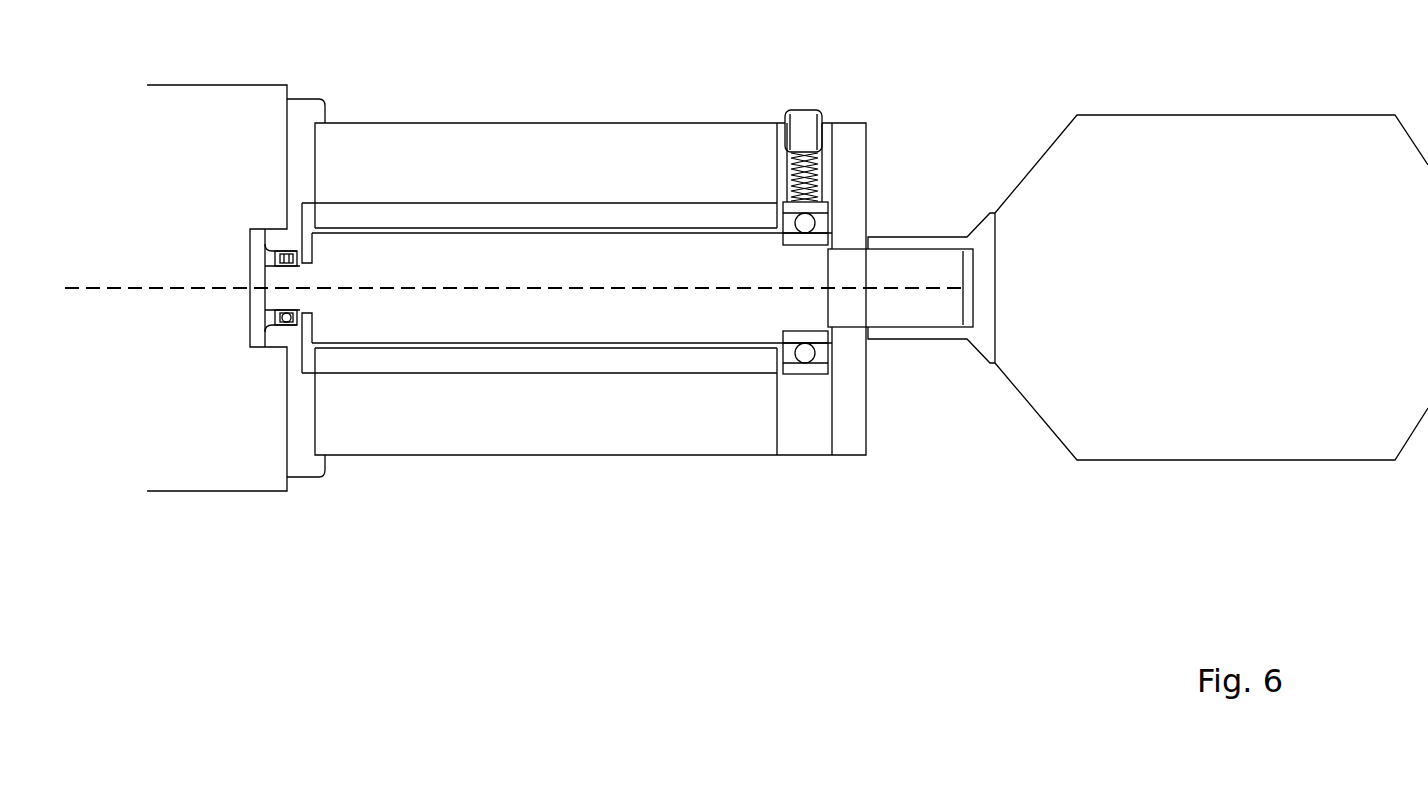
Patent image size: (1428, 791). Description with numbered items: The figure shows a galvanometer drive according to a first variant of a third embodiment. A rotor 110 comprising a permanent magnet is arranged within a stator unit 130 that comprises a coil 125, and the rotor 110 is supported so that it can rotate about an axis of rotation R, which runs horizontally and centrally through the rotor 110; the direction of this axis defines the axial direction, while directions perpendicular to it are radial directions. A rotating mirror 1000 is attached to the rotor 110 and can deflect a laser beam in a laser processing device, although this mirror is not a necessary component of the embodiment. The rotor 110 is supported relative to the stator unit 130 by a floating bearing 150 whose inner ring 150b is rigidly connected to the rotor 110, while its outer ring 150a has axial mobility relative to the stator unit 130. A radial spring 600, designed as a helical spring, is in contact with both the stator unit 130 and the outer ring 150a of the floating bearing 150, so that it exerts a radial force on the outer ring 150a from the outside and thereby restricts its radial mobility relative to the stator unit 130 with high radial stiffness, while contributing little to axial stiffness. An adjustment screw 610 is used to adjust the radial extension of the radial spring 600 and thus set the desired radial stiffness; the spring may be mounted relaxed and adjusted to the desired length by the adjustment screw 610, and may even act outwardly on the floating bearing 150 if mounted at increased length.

The axis of rotation R is at (92, 287).
The rotor 110 is at (453, 327).
The coil 125 is at (582, 365).
The stator unit 130 is at (715, 422).
The floating bearing 150 is at (805, 271).
The outer ring 150a is at (790, 208).
The inner ring 150b is at (818, 336).
The radial spring 600 is at (800, 167).
The adjustment screw 610 is at (802, 122).
The rotating mirror 1000 is at (1364, 141).